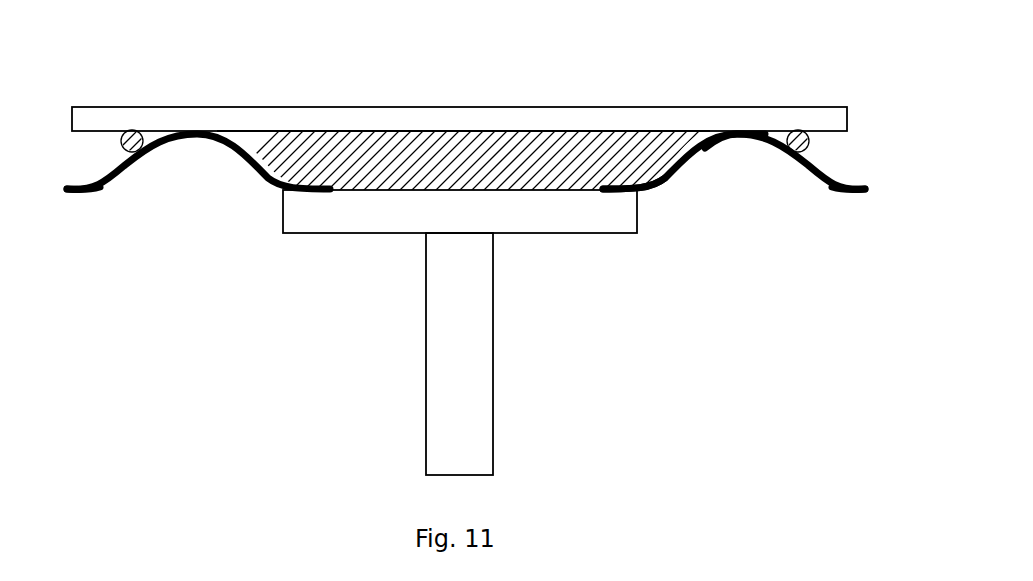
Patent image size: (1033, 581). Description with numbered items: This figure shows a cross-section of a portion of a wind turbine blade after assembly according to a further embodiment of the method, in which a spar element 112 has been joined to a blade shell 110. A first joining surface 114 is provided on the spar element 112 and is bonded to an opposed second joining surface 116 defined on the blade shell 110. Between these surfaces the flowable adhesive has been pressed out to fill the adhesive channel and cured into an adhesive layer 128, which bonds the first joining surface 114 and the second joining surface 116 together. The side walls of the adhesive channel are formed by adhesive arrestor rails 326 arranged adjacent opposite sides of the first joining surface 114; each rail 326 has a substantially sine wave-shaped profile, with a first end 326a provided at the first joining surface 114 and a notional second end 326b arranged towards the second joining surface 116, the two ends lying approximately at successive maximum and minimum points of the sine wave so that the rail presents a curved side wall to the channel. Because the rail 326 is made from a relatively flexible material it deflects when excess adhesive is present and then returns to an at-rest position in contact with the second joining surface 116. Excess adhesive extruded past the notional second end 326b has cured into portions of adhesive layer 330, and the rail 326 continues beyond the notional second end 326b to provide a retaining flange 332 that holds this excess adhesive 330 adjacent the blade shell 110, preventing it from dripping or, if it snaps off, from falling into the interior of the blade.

The blade shell 110 is at (218, 120).
The spar element 112 is at (457, 373).
The first joining surface 114 is at (563, 250).
The second joining surface 116 is at (497, 130).
The adhesive layer 128 is at (338, 140).
The adhesive arrestor rail 326 is at (250, 160).
The first end 326a is at (651, 200).
The notional second end 326b is at (740, 150).
The excess adhesive 330 is at (130, 130).
The retaining flange 332 is at (98, 193).